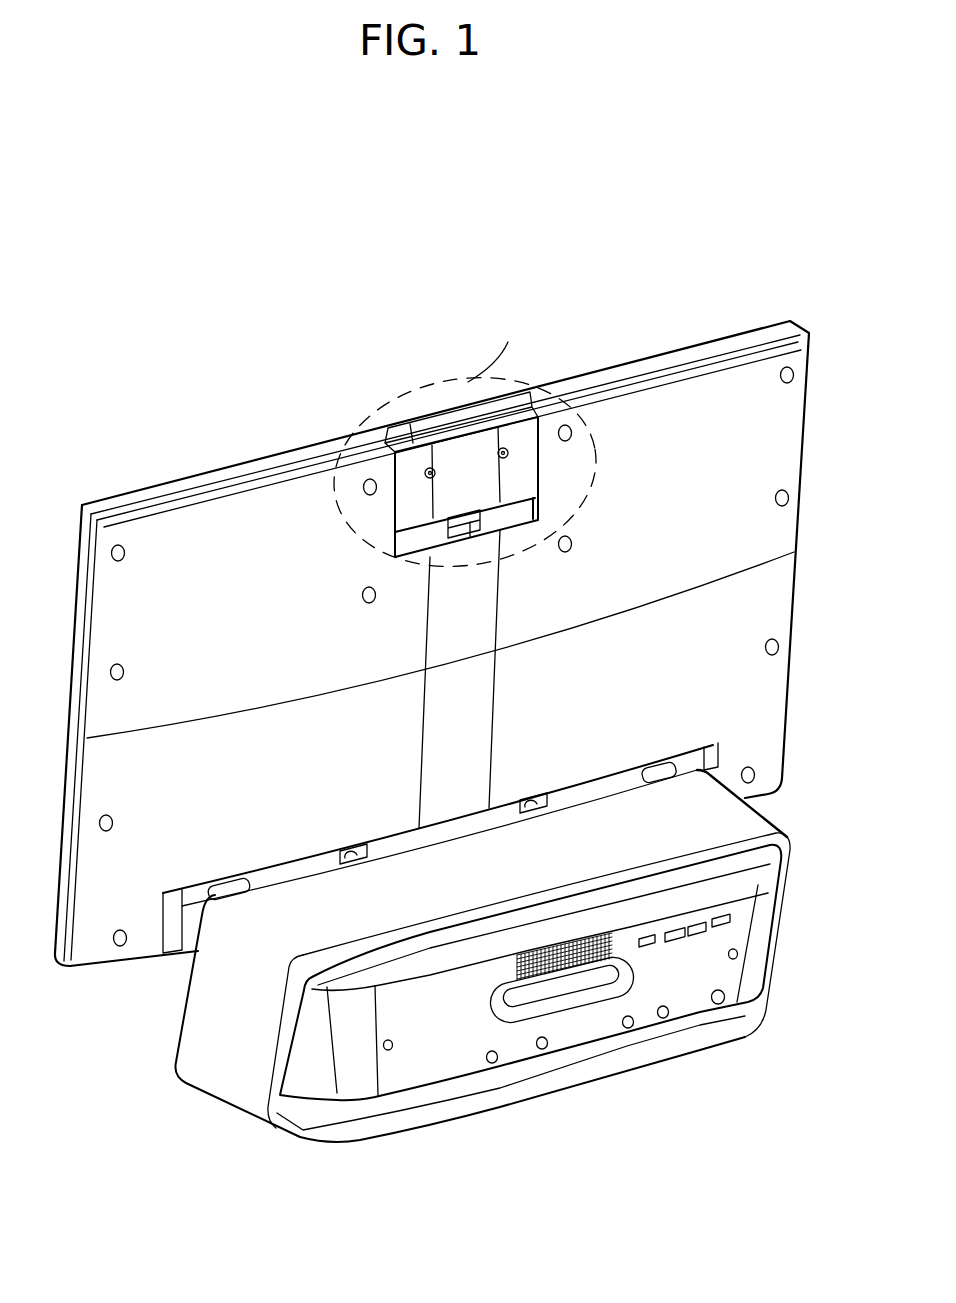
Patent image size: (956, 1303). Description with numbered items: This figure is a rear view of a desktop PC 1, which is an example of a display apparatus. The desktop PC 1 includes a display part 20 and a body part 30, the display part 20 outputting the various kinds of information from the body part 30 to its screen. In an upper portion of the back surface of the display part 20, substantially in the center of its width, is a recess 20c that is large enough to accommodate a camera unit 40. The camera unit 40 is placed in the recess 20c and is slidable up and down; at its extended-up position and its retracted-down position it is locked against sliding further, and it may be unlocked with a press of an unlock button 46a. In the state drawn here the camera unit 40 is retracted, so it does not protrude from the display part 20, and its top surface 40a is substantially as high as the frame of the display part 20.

The desktop PC 1 is at (772, 218).
The display part 20 is at (665, 356).
The recess 20c is at (568, 552).
The body part 30 is at (220, 1073).
The camera unit 40 is at (414, 590).
The top surface 40a is at (390, 426).
The unlock button 46a is at (470, 525).